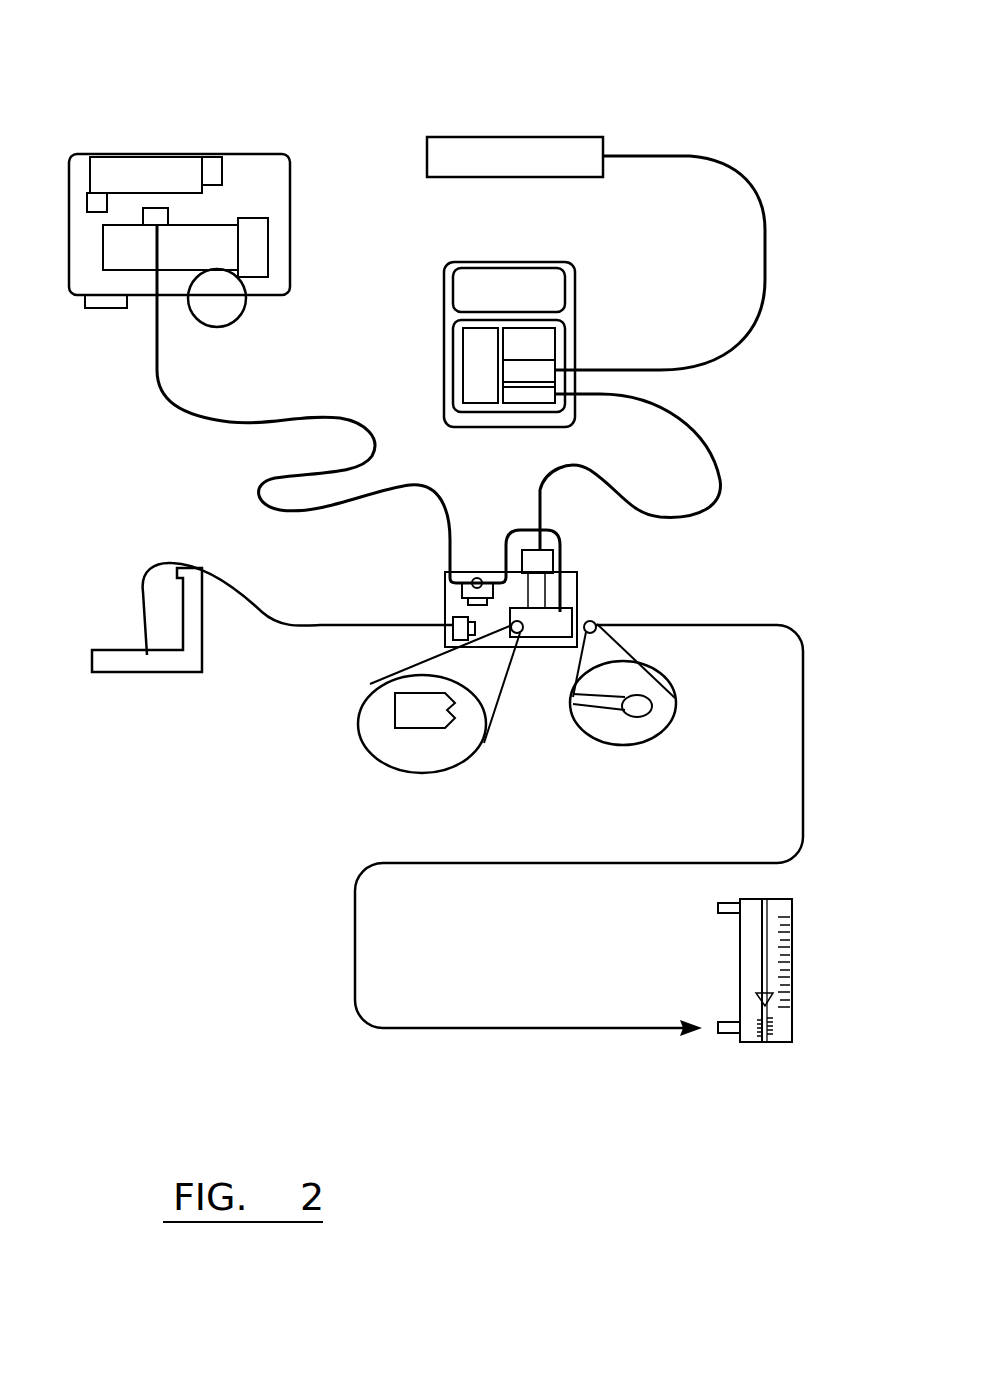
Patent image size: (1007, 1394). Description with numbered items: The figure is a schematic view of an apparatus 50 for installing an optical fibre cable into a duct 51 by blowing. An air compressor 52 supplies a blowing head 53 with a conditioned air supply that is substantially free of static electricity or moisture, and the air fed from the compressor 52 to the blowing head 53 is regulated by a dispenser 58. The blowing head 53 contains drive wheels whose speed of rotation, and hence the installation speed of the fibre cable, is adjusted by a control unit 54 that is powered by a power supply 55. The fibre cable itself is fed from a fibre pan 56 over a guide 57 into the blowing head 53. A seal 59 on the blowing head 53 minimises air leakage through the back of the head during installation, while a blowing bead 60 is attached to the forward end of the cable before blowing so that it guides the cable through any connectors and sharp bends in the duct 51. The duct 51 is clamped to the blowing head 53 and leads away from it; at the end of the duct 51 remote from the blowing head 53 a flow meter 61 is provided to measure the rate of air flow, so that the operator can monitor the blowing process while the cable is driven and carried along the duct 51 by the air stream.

The apparatus 50 is at (742, 442).
The duct 51 is at (357, 950).
The air compressor 52 is at (176, 154).
The blowing head 53 is at (577, 612).
The control unit 54 is at (446, 263).
The power supply 55 is at (505, 150).
The fibre pan 56 is at (92, 667).
The guide 57 is at (150, 578).
The dispenser 58 is at (450, 580).
The seal 59 is at (520, 633).
The blowing bead 60 is at (643, 707).
The flow meter 61 is at (740, 967).